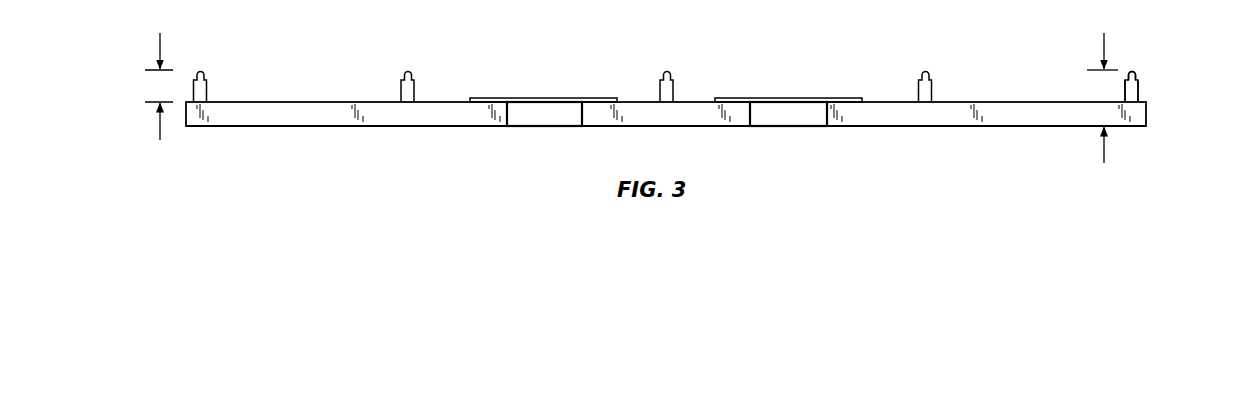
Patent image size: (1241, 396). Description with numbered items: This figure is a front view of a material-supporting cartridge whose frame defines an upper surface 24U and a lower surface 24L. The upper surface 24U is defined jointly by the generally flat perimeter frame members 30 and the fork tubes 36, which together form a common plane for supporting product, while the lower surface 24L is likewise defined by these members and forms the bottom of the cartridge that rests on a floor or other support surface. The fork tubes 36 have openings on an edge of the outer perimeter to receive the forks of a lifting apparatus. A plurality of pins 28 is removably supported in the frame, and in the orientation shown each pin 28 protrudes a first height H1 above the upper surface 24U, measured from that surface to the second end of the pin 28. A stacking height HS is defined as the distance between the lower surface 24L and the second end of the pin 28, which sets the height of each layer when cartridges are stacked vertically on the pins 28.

The upper surface 24U is at (298, 98).
The lower surface 24L is at (868, 129).
The pin 28 is at (206, 70).
The perimeter frame member 30 is at (638, 115).
The fork tube 36 is at (558, 127).
The first height H1 is at (158, 48).
The stacking height HS is at (1102, 48).